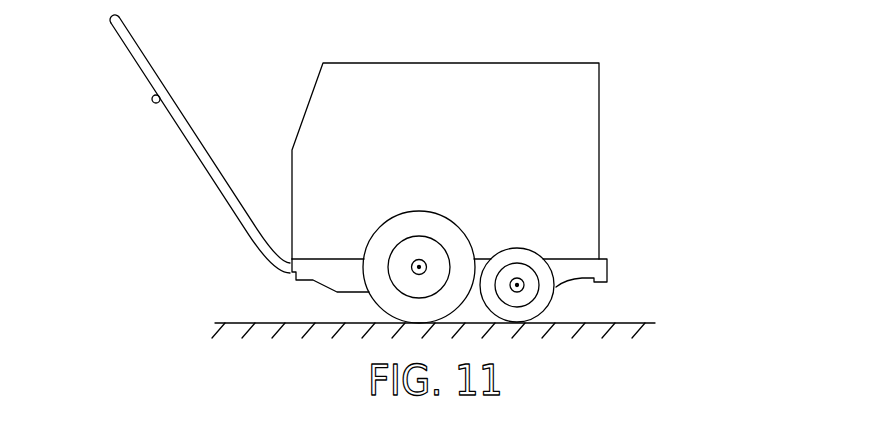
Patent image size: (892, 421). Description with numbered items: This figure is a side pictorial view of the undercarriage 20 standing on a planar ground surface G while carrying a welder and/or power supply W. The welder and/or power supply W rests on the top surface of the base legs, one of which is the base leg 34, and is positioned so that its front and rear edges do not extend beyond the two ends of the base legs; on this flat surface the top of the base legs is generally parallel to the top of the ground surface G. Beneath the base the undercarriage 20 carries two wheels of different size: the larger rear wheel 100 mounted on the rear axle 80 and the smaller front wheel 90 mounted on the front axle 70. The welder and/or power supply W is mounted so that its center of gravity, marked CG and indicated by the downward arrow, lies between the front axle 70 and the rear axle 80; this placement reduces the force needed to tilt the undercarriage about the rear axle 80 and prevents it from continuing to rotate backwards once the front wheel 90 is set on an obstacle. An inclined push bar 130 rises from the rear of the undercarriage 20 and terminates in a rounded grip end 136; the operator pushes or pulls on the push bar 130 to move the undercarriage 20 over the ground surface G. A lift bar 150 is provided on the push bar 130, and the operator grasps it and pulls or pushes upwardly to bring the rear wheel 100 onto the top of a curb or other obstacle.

The undercarriage 20 is at (495, 244).
The base leg 34 is at (577, 257).
The front axle 70 is at (517, 278).
The rear axle 80 is at (414, 263).
The front wheel 90 is at (530, 252).
The rear wheel 100 is at (408, 218).
The push bar 130 is at (162, 144).
The handle grip end 136 is at (118, 35).
The lift bar 150 is at (145, 106).
The welder and/or power supply W is at (533, 80).
The center of gravity CG is at (467, 210).
The ground surface G is at (237, 323).